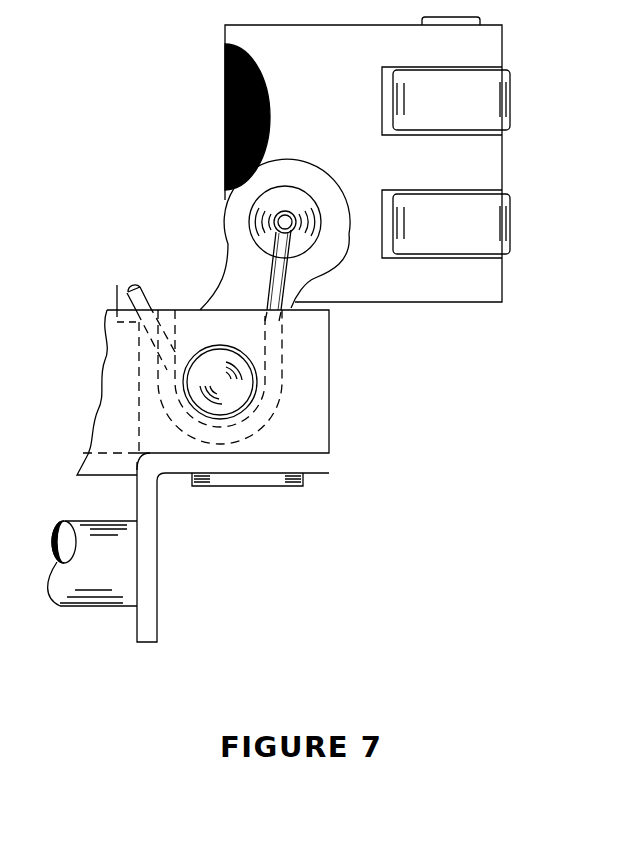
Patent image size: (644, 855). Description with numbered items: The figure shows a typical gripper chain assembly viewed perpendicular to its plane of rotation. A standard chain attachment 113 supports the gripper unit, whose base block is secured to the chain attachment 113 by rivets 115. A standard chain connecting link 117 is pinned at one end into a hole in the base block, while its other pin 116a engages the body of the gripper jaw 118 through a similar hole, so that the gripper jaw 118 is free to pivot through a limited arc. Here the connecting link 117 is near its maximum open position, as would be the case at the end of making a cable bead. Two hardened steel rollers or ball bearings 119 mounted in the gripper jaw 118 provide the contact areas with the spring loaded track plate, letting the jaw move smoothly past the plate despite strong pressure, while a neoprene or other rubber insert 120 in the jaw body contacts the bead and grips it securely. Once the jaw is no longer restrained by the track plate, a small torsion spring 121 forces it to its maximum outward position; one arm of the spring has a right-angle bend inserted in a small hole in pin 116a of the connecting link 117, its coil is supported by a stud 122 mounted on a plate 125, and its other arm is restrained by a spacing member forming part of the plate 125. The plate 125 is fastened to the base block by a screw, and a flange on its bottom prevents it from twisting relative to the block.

The chain attachment 113 is at (166, 617).
The rivets 115 is at (263, 490).
The pin of connecting link 116a is at (247, 220).
The chain connecting link 117 is at (333, 273).
The gripper jaw 118 is at (505, 45).
The rollers 119 is at (507, 133).
The rubber insert 120 is at (222, 165).
The torsion spring 121 is at (272, 266).
The stud 122 is at (181, 384).
The plate 125 is at (337, 433).